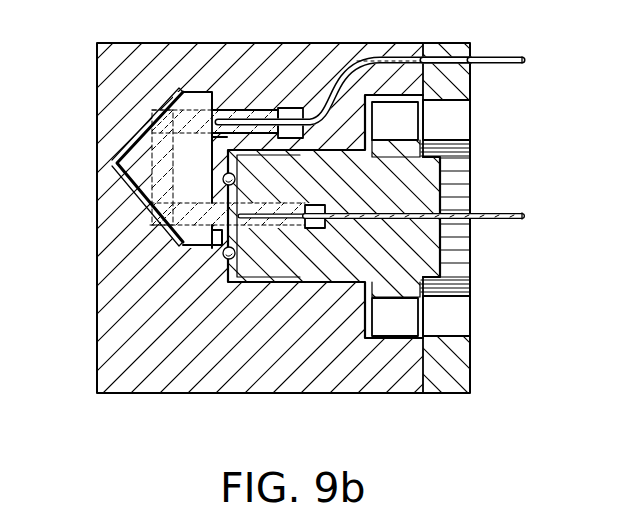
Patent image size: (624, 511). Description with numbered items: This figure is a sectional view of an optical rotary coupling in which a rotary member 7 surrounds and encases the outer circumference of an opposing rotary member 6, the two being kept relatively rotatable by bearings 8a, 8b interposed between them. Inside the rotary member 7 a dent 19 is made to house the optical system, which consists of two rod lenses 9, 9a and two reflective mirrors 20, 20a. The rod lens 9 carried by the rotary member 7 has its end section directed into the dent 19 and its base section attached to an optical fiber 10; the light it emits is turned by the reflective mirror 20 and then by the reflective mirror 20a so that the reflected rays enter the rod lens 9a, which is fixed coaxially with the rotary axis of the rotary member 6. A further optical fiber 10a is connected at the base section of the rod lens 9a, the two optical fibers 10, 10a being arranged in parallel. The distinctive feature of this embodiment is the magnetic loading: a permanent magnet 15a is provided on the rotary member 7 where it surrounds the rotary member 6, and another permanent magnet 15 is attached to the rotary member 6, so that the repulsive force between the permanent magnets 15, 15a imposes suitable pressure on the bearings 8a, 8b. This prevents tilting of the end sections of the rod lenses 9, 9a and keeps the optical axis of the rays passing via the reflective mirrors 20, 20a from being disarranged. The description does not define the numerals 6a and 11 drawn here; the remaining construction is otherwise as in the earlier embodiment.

The rotary member 6 is at (367, 52).
The cable sheath 6a is at (467, 44).
The rotary member 7 is at (430, 252).
The bearing 8a is at (223, 180).
The bearing 8b is at (223, 254).
The rod lens 9 is at (253, 110).
The rod lens 9a is at (370, 180).
The optical fiber 10 is at (507, 57).
The optical fiber 10a is at (478, 214).
The optical fiber 11 is at (290, 108).
The permanent magnet 15 is at (422, 96).
The permanent magnet 15a is at (472, 130).
The dent 19 is at (117, 160).
The reflective mirror 20 is at (133, 145).
The reflective mirror 20a is at (150, 207).